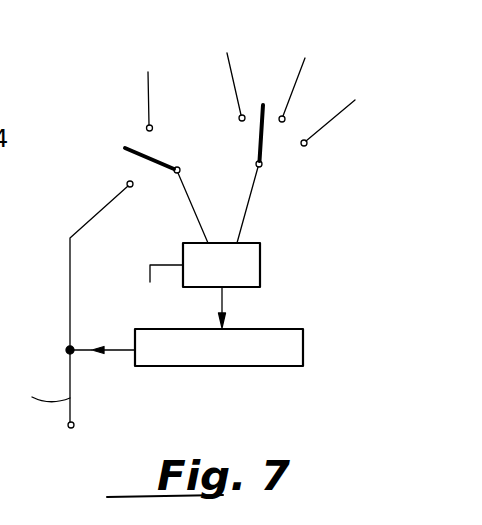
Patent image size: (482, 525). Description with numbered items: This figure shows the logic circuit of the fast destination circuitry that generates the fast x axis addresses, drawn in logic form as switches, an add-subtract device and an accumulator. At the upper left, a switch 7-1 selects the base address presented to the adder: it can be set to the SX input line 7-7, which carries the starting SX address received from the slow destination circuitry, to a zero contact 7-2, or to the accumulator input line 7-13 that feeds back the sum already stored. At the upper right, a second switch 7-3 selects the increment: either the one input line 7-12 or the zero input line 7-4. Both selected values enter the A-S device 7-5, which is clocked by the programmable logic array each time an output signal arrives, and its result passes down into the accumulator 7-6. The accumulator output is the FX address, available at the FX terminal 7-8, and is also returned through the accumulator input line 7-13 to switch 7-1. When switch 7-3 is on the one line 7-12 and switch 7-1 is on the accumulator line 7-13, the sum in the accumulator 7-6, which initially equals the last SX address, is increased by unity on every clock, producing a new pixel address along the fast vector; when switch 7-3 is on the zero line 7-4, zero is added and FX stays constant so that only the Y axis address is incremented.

The switch 7-1 is at (135, 165).
The switch contact 7-2 is at (148, 93).
The switch 7-3 is at (278, 153).
The zero input line 7-4 is at (340, 115).
The A-S device 7-5 is at (260, 262).
The accumulator 7-6 is at (297, 350).
The SX input line 7-7 is at (227, 70).
The FX output terminal 7-8 is at (75, 423).
The one input line 7-12 is at (302, 80).
The accumulator input line 7-13 is at (112, 202).